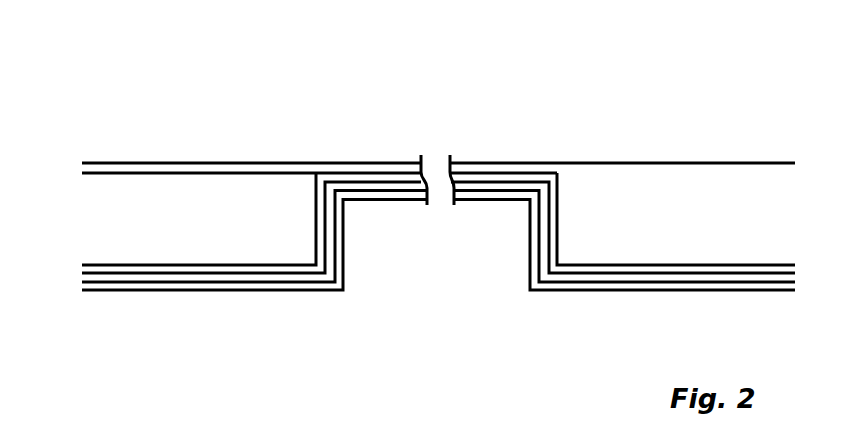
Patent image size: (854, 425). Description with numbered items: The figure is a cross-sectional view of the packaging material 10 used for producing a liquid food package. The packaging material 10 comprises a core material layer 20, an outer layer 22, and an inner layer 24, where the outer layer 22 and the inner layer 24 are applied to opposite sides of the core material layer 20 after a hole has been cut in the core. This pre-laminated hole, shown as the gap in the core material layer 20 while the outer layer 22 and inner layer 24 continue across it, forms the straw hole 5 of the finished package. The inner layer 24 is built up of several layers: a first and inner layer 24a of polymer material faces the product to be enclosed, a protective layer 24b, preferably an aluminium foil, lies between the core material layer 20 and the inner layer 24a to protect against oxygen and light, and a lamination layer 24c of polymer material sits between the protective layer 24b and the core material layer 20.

The packaging material 10 is at (585, 140).
The core material layer 20 is at (285, 192).
The outer layer 22 is at (498, 168).
The straw hole 5 is at (432, 259).
The inner layer 24 is at (76, 264).
The first and inner layer 24a is at (343, 249).
The protective layer 24b is at (568, 277).
The lamination layer 24c is at (750, 270).